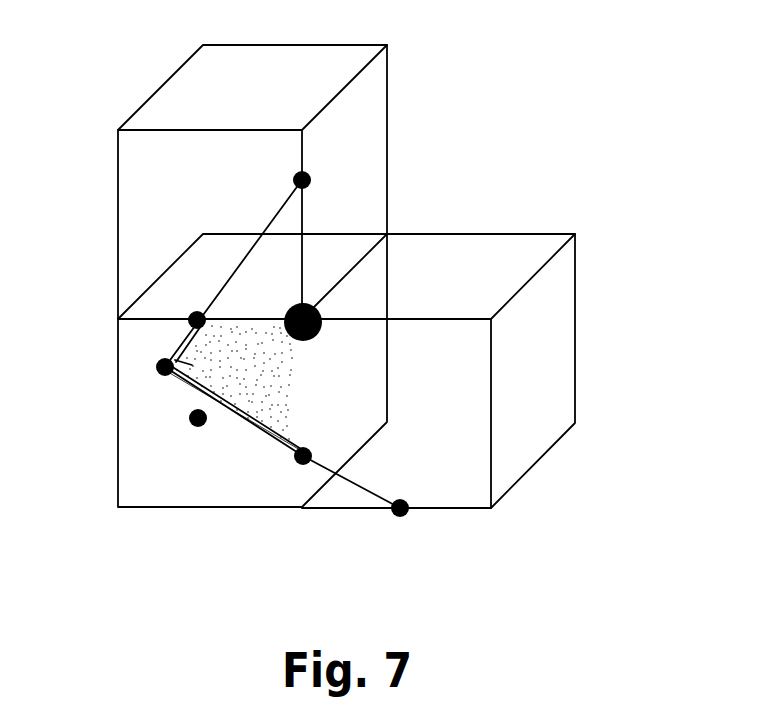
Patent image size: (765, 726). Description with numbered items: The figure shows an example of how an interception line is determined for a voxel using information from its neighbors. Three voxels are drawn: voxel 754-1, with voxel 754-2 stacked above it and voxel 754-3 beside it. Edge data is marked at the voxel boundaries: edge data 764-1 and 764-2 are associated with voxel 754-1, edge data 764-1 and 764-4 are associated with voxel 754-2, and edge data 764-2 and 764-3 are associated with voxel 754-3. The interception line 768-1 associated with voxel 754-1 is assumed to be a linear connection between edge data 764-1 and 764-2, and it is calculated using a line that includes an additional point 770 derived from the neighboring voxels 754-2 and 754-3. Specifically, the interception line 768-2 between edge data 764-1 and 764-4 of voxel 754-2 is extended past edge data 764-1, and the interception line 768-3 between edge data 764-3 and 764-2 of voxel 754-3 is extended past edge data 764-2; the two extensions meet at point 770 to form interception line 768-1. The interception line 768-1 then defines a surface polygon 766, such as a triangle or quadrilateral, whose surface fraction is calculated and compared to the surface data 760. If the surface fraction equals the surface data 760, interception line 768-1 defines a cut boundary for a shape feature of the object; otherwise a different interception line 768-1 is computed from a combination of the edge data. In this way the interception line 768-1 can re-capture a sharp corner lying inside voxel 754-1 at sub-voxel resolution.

The voxel 754-1 is at (141, 513).
The voxel 754-2 is at (160, 79).
The voxel 754-3 is at (583, 292).
The surface data 760 is at (200, 427).
The edge data 764-1 is at (190, 317).
The edge data 764-2 is at (300, 464).
The edge data 764-3 is at (402, 516).
The edge data 764-4 is at (305, 178).
The surface polygon 766 is at (162, 361).
The interception line 768-1 is at (247, 418).
The interception line 768-2 is at (237, 267).
The interception line 768-3 is at (348, 483).
The additional point 770 is at (157, 367).